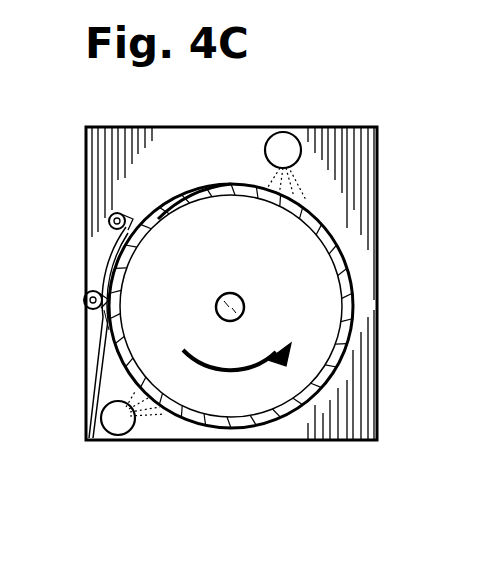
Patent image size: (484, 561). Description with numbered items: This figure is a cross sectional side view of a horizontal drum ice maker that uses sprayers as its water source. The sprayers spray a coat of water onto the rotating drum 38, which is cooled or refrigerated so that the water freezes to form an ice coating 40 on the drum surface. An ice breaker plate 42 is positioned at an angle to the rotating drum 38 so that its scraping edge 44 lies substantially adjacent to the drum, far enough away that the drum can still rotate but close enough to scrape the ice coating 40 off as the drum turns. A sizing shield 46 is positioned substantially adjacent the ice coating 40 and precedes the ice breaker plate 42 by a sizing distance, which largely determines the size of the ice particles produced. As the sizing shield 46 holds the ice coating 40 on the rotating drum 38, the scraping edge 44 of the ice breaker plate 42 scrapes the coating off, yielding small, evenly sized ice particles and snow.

The rotating drum 38 is at (256, 244).
The ice coating 40 is at (191, 186).
The sizing shield 46 is at (126, 216).
The scraping edge 44 is at (97, 334).
The ice breaker plate 42 is at (94, 388).